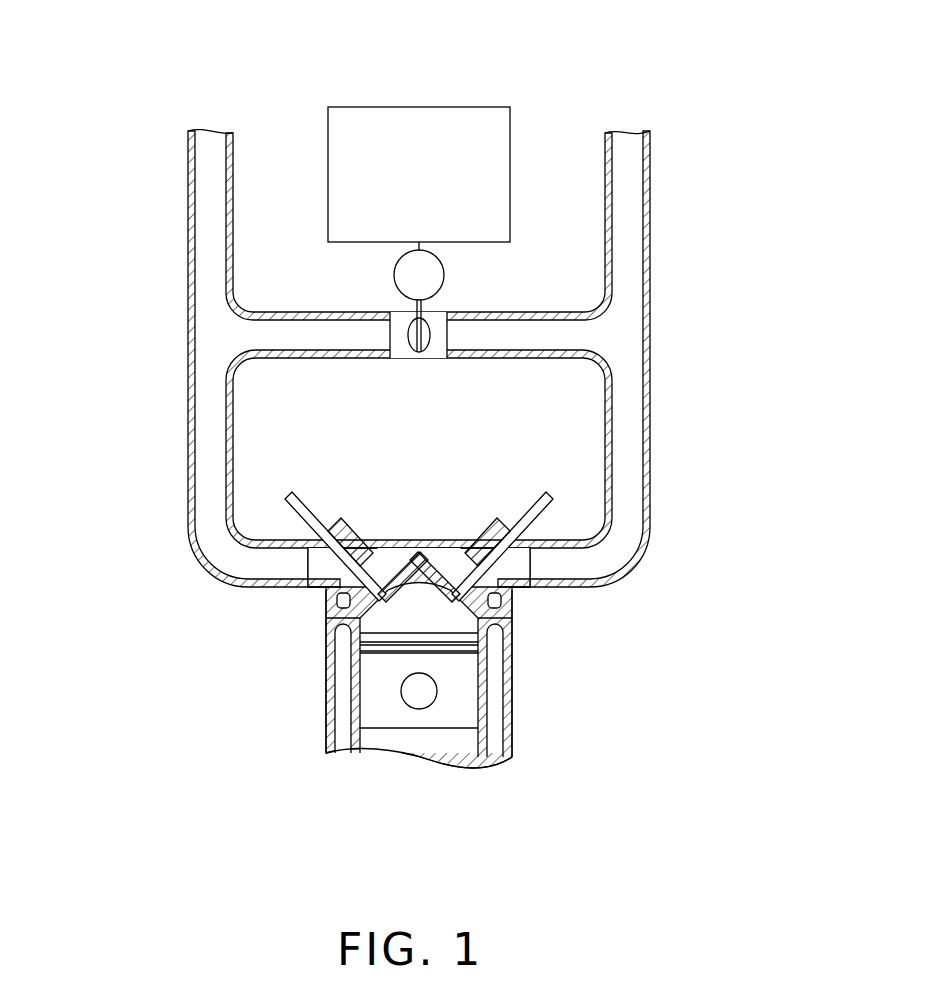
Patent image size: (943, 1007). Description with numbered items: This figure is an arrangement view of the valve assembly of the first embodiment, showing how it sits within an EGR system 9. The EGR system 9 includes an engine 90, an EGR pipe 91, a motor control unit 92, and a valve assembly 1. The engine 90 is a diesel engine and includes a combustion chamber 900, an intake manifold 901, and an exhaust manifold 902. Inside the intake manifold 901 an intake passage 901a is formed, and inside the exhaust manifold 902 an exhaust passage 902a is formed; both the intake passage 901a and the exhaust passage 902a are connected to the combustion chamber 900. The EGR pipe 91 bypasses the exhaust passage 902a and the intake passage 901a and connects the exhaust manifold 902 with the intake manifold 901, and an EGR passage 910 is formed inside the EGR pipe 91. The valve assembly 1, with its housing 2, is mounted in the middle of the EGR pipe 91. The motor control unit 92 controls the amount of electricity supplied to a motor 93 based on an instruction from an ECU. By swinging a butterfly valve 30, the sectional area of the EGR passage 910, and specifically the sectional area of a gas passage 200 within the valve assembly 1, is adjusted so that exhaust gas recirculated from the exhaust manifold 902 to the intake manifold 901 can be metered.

The EGR system 9 is at (423, 389).
The motor control unit 92 is at (377, 107).
The motor 93 is at (395, 280).
The EGR pipe 91 is at (352, 312).
The valve assembly 1 is at (474, 320).
The gas passage 200 is at (437, 328).
The butterfly valve 30 is at (428, 352).
The housing 2 is at (405, 358).
The EGR passage 910 is at (419, 440).
The engine 90 is at (473, 470).
The exhaust passage 902a is at (208, 406).
The exhaust manifold 902 is at (201, 358).
The intake passage 901a is at (630, 395).
The intake manifold 901 is at (641, 359).
The combustion chamber 900 is at (412, 603).